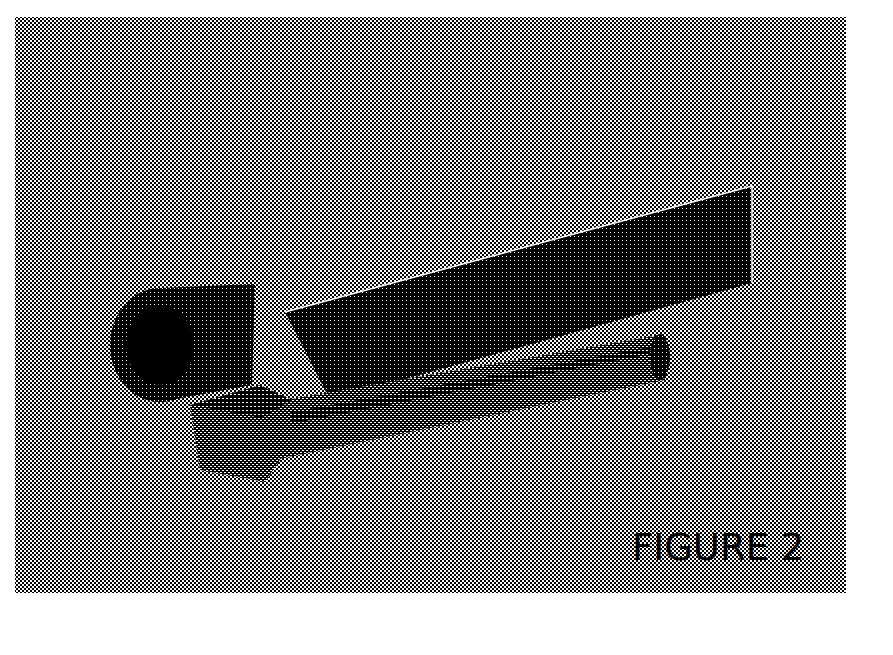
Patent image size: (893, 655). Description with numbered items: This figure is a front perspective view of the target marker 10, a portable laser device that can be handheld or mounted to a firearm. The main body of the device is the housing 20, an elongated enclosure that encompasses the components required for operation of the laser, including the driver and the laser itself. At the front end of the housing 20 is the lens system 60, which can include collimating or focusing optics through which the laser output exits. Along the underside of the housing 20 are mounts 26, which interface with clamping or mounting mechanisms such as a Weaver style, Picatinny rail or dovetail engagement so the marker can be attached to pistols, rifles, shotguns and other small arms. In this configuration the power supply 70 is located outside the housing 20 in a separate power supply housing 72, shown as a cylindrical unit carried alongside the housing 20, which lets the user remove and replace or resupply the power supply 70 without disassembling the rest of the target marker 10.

The target marker 10 is at (452, 295).
The housing 20 is at (733, 282).
The mounts 26 is at (268, 415).
The lens system 60 is at (115, 305).
The power supply 70 is at (415, 424).
The power supply housing 72 is at (550, 370).